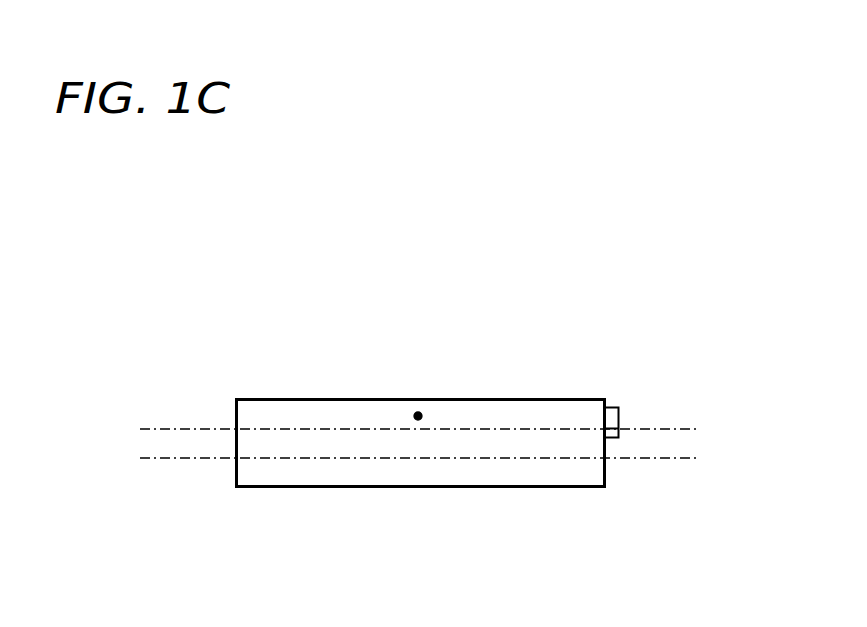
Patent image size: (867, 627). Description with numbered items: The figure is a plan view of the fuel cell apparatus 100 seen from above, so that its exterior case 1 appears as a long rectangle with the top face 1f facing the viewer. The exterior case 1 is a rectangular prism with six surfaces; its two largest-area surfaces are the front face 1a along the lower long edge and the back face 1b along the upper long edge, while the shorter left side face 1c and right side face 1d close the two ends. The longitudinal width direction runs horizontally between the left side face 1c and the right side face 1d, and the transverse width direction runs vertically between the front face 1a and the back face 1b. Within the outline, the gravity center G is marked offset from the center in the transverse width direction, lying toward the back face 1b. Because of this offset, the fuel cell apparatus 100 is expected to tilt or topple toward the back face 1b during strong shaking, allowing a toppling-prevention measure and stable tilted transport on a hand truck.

The fuel cell apparatus 100 is at (409, 418).
The exterior case 1 is at (522, 425).
The front face 1a is at (427, 488).
The back face 1b is at (313, 398).
The left side face 1c is at (235, 421).
The right side face 1d is at (605, 468).
The top face 1f is at (380, 416).
The gravity center G is at (426, 416).